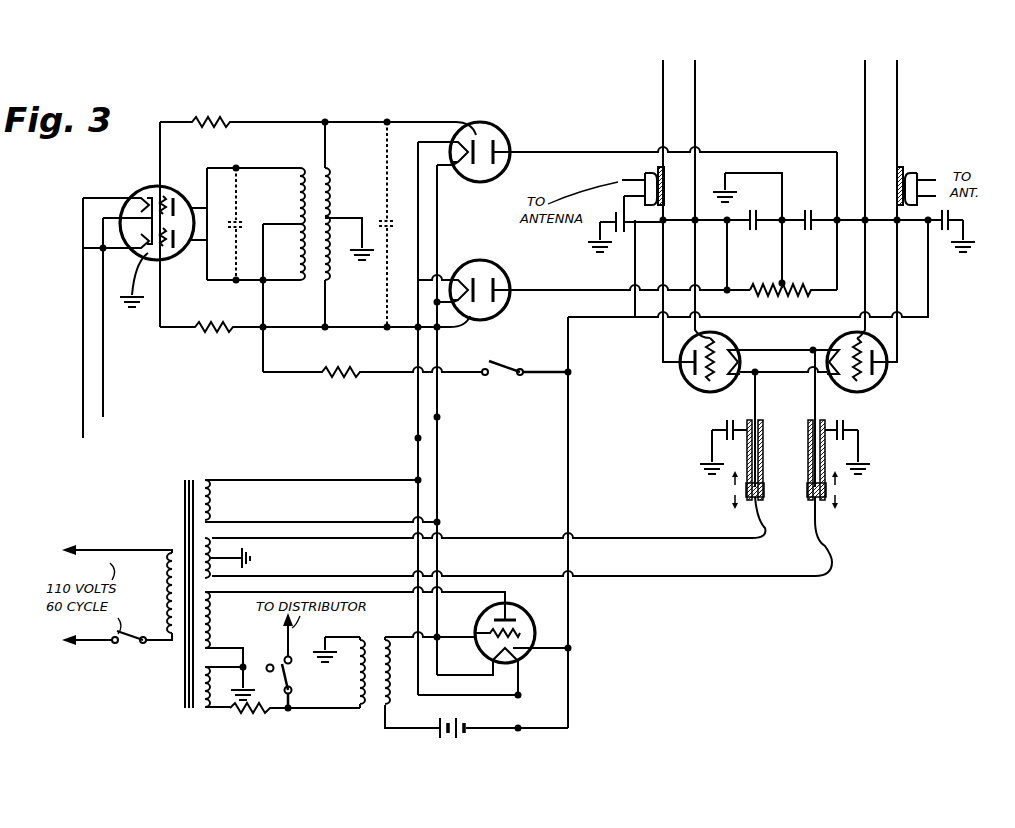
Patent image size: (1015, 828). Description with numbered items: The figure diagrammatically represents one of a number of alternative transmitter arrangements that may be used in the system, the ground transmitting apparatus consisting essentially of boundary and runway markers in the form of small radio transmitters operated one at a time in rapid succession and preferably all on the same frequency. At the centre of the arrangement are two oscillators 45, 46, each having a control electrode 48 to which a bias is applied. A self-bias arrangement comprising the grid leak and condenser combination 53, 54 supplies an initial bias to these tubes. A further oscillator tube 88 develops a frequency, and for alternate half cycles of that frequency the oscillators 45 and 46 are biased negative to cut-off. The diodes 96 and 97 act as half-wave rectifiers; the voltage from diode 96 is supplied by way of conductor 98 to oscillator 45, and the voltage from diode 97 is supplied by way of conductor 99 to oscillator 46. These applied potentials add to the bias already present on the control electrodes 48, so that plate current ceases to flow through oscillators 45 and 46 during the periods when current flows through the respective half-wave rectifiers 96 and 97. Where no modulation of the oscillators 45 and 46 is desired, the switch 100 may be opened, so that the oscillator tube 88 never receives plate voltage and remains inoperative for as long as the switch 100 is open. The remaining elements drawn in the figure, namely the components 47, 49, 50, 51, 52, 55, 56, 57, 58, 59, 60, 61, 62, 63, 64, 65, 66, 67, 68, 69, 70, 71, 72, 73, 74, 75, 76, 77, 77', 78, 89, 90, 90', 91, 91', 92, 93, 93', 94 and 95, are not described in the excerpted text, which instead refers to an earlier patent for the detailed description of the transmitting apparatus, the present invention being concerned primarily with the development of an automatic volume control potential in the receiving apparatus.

The oscillator 45 is at (733, 338).
The oscillator 46 is at (888, 386).
The plate 47 is at (690, 376).
The control electrodes 48 is at (706, 390).
The antenna lead 49 is at (662, 113).
The antenna lead 50 is at (696, 115).
The conductor 51 is at (570, 477).
The vacuum tube 52 is at (523, 612).
The grid leak 53 is at (772, 294).
The condenser 54 is at (757, 208).
The grid 55 is at (733, 384).
The conductor 56 is at (668, 536).
The conductor 57 is at (665, 578).
The ground connection 58 is at (240, 570).
The transformer primary 59 is at (180, 542).
The supply leads 60 is at (112, 548).
The electrode 61 is at (764, 432).
The condenser 62 is at (722, 428).
The contact 63 is at (765, 496).
The antenna coupling 64 is at (652, 174).
The conductor 65 is at (665, 222).
The condenser 66 is at (627, 240).
The condenser 67 is at (618, 210).
The plate 68 is at (495, 606).
The transformer winding 69 is at (212, 620).
The filament 70 is at (480, 628).
The grid 71 is at (538, 640).
The transformer winding 72 is at (212, 503).
The battery 73 is at (462, 742).
The transformer winding 74 is at (215, 712).
The choke coil 75 is at (375, 708).
The resistor 76 is at (252, 720).
The switch 77 is at (300, 686).
The switch contact 77' is at (275, 686).
The distributor lead 78 is at (286, 656).
The oscillator tube 88 is at (134, 258).
The grid 89 is at (136, 198).
The filament 90 is at (147, 184).
The filament 90' is at (152, 261).
The resistor 91 is at (318, 112).
The resistor 91' is at (305, 339).
The transformer 92 is at (310, 282).
The plate 93 is at (181, 190).
The plate 93' is at (187, 257).
The conductor 94 is at (268, 353).
The resistor 95 is at (354, 366).
The diode 96 is at (503, 134).
The diode 97 is at (500, 264).
The conductor 98 is at (528, 158).
The conductor 99 is at (562, 286).
The switch 100 is at (505, 360).